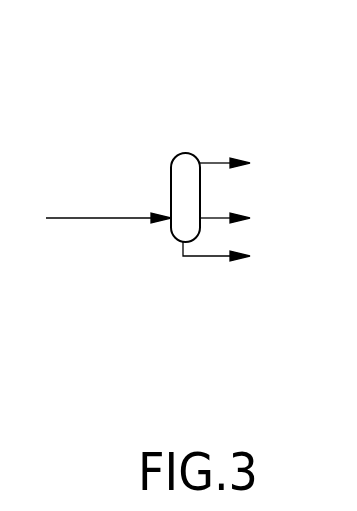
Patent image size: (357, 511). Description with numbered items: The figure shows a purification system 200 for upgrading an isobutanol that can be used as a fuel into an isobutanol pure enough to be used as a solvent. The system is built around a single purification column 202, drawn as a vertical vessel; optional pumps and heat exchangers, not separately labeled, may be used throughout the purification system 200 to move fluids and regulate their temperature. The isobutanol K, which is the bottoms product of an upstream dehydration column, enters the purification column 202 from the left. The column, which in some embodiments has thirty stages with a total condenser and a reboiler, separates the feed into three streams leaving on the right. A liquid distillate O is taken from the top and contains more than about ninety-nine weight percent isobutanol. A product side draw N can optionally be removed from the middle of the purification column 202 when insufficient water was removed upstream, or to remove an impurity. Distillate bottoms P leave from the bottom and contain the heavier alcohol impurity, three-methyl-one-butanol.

The purification system 200 is at (262, 102).
The purification column 202 is at (172, 178).
The isobutanol K is at (108, 203).
The liquid distillate O is at (239, 162).
The product side draw N is at (239, 214).
The distillate bottoms P is at (230, 254).